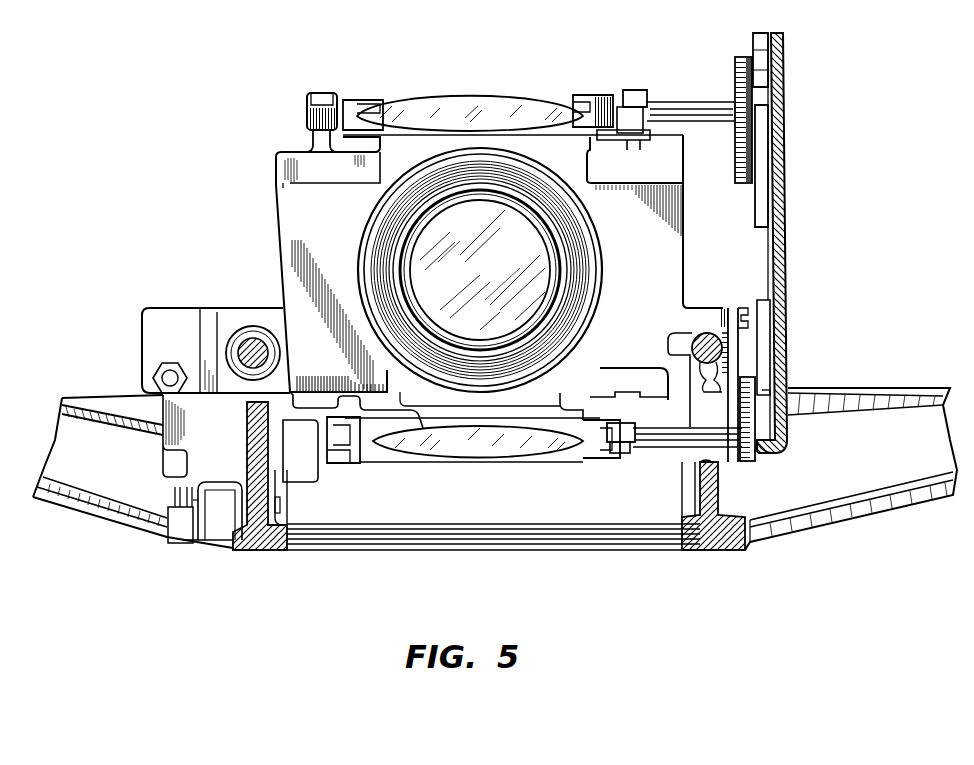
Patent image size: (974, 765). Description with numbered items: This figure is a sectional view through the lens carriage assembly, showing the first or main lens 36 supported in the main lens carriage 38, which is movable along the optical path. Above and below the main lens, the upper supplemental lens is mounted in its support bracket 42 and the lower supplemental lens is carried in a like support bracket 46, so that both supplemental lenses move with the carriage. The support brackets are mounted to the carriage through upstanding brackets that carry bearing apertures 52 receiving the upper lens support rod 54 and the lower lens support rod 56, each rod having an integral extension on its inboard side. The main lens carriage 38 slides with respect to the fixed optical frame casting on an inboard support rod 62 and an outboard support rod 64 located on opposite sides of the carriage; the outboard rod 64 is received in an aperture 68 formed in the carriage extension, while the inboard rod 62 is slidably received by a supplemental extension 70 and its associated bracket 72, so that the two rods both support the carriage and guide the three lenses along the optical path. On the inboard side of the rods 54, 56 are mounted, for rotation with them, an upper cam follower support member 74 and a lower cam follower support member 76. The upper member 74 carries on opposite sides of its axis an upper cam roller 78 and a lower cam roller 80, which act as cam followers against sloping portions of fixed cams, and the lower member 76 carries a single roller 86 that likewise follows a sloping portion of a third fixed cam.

The main lens 36 is at (360, 263).
The main lens carriage 38 is at (276, 198).
The support bracket 42 is at (366, 98).
The support bracket 46 is at (400, 458).
The bearing apertures 52 is at (637, 455).
The upper lens support rod 54 is at (306, 125).
The lower lens support rod 56 is at (320, 460).
The inboard support rod 62 is at (693, 340).
The outboard support rod 64 is at (246, 322).
The aperture 68 is at (274, 294).
The supplemental extension 70 is at (728, 302).
The bracket 72 is at (695, 400).
The upper cam follower support member 74 is at (740, 92).
The lower cam follower support member 76 is at (782, 450).
The upper cam roller 78 is at (757, 52).
The lower cam roller 80 is at (757, 186).
The roller 86 is at (775, 365).